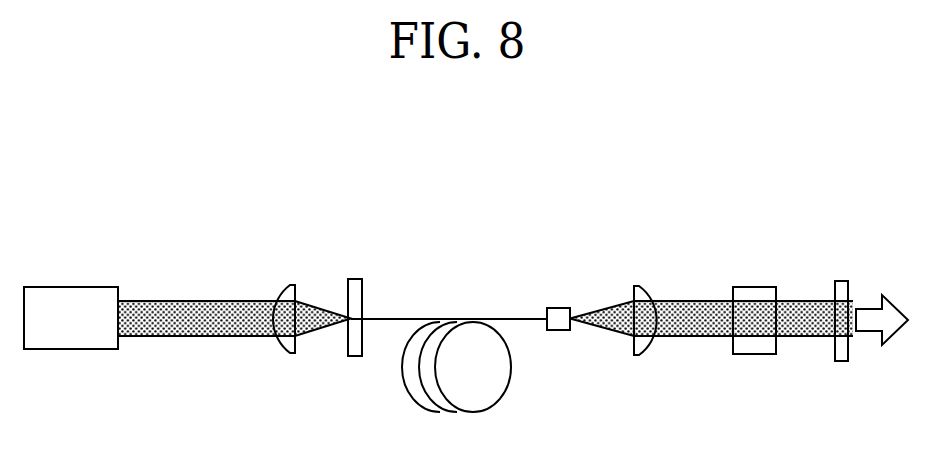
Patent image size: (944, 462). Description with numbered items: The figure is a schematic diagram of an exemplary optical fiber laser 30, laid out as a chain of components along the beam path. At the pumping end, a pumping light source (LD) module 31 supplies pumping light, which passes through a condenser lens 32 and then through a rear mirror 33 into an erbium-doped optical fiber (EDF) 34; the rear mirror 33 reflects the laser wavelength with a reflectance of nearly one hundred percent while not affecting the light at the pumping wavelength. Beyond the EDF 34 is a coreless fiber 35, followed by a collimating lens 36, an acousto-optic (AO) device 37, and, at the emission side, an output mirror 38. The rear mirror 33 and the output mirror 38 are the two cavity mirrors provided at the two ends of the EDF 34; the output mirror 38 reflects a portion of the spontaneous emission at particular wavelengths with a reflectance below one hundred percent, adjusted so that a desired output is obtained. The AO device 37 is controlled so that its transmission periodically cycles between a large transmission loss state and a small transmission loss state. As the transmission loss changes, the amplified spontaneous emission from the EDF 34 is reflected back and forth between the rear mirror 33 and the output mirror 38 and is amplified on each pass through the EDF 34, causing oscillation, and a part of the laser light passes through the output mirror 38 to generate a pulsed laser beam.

The optical fiber laser 30 is at (428, 206).
The pumping light source module 31 is at (74, 287).
The condenser lens 32 is at (292, 285).
The rear mirror 33 is at (355, 279).
The erbium-doped optical fiber 34 is at (410, 318).
The coreless fiber 35 is at (560, 308).
The collimating lens 36 is at (641, 286).
The acousto-optic device 37 is at (753, 287).
The output mirror 38 is at (840, 281).